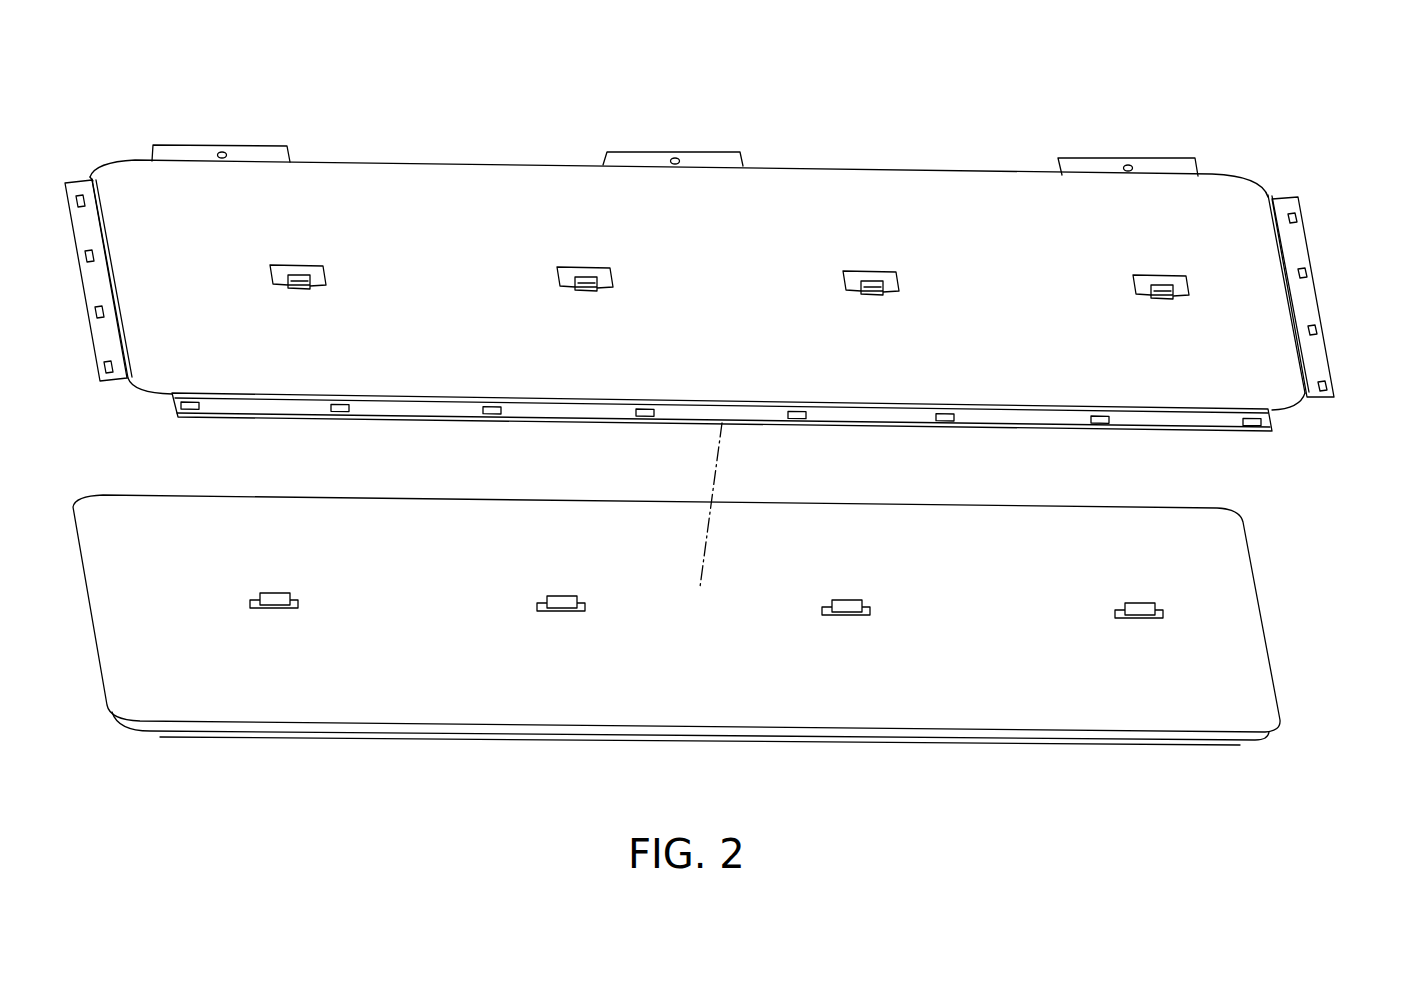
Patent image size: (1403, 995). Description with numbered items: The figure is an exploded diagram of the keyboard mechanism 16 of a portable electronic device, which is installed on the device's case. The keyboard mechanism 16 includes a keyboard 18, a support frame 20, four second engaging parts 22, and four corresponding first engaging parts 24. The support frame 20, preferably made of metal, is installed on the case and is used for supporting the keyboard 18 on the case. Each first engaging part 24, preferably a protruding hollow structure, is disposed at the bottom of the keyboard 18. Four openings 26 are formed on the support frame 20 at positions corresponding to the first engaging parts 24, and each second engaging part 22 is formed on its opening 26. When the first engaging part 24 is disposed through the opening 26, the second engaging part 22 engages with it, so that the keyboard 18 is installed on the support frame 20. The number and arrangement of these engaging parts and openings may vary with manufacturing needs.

The keyboard mechanism 16 is at (1290, 88).
The keyboard 18 is at (1237, 617).
The support frame 20 is at (1236, 214).
The second engaging part 22 is at (1193, 287).
The first engaging part 24 is at (1141, 603).
The opening 26 is at (1147, 282).